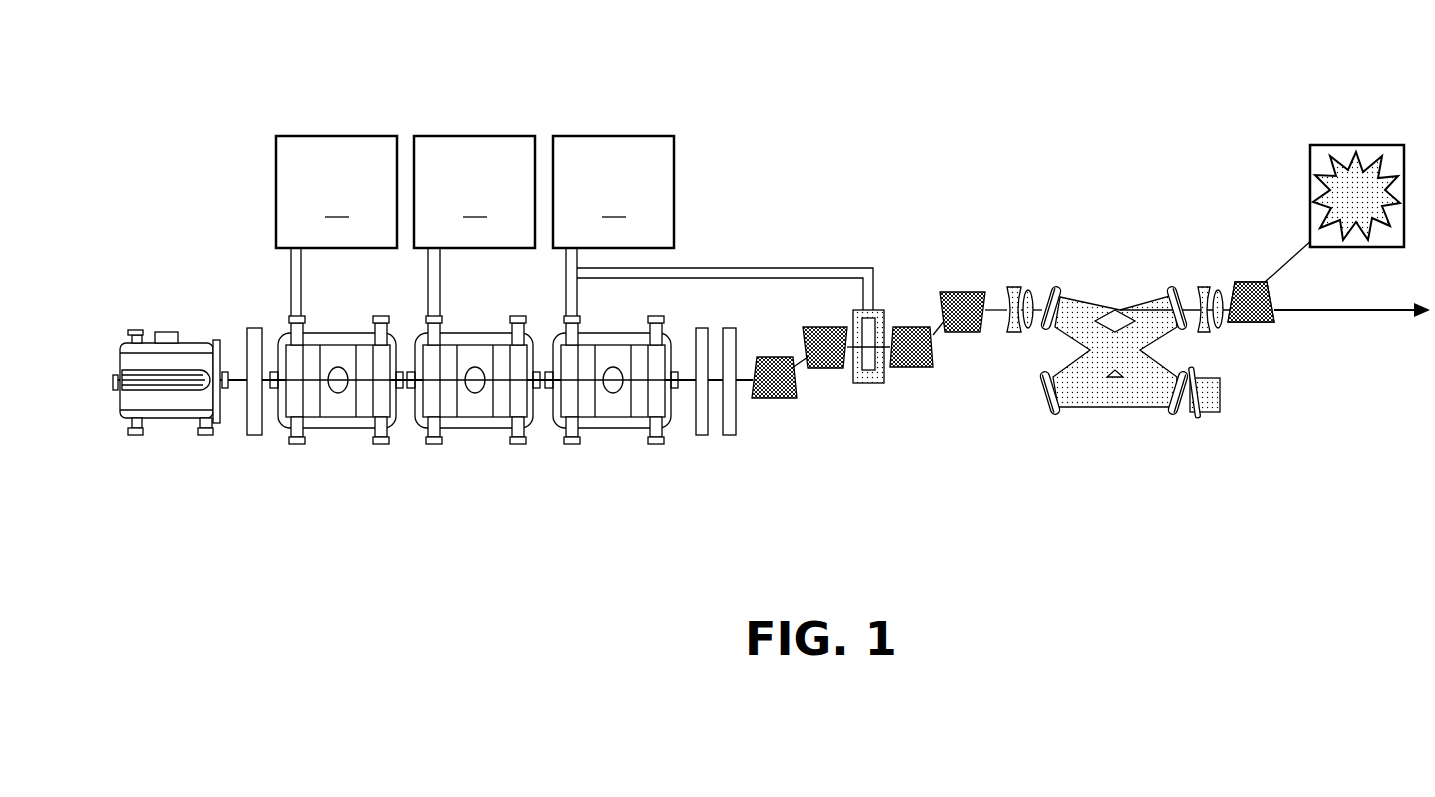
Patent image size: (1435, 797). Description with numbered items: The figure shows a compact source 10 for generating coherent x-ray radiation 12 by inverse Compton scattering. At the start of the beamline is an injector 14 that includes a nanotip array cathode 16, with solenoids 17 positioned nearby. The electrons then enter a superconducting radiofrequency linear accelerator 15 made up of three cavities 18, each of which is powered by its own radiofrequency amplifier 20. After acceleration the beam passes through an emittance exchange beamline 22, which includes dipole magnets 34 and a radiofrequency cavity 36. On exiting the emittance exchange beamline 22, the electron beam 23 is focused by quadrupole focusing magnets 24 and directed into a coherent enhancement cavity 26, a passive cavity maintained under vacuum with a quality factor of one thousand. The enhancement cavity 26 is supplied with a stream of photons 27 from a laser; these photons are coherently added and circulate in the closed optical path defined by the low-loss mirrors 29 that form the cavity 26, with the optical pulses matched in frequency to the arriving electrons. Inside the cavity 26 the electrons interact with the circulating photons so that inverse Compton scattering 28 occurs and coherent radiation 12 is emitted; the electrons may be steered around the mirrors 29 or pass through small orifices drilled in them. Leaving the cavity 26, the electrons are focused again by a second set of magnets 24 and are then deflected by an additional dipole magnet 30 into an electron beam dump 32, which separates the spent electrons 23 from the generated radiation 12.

The compact source 10 is at (272, 75).
The coherent x-ray radiation 12 is at (1327, 312).
The injector 14 is at (153, 310).
The superconducting radiofrequency linear accelerator 15 is at (423, 512).
The nanotip array cathode 16 is at (208, 397).
The solenoids 17 is at (253, 430).
The cavities 18 is at (342, 423).
The radiofrequency amplifier 20 is at (574, 226).
The emittance exchange beamline 22 is at (926, 440).
The electron beam 23 is at (990, 293).
The quadrupole focusing magnets 24 is at (1012, 260).
The coherent enhancement cavity 26 is at (1077, 263).
The stream of photons 27 is at (1208, 402).
The inverse Compton scattering 28 is at (1113, 290).
The optical elements (mirrors) 29 is at (1045, 331).
The dipole magnet 30 is at (1238, 280).
The electron beam dump 32 is at (1345, 162).
The dipole magnets 34 is at (818, 370).
The radiofrequency cavity 36 is at (871, 385).